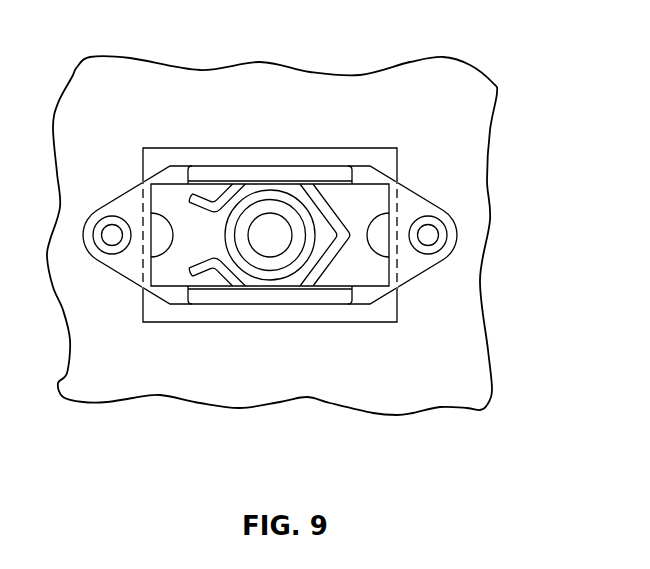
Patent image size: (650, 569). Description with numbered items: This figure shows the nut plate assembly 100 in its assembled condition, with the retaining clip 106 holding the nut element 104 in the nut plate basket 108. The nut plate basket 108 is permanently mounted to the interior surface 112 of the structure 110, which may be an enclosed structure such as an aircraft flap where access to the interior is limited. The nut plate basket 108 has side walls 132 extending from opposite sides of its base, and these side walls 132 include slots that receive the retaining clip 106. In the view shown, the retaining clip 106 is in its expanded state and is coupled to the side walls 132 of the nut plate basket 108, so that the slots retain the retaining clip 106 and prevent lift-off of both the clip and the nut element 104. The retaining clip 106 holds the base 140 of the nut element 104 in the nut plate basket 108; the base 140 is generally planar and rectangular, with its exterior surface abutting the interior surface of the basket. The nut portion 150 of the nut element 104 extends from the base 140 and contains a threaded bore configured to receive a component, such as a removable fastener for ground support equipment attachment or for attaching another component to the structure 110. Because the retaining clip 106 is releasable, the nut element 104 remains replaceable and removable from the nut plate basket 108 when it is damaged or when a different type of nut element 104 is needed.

The nut plate assembly 100 is at (298, 136).
The nut element 104 is at (362, 273).
The retaining clip 106 is at (279, 256).
The nut plate basket 108 is at (412, 263).
The structure 110 is at (247, 395).
The interior surface 112 is at (443, 180).
The side walls 132 is at (230, 295).
The base 140 is at (205, 277).
The nut portion 150 is at (288, 268).